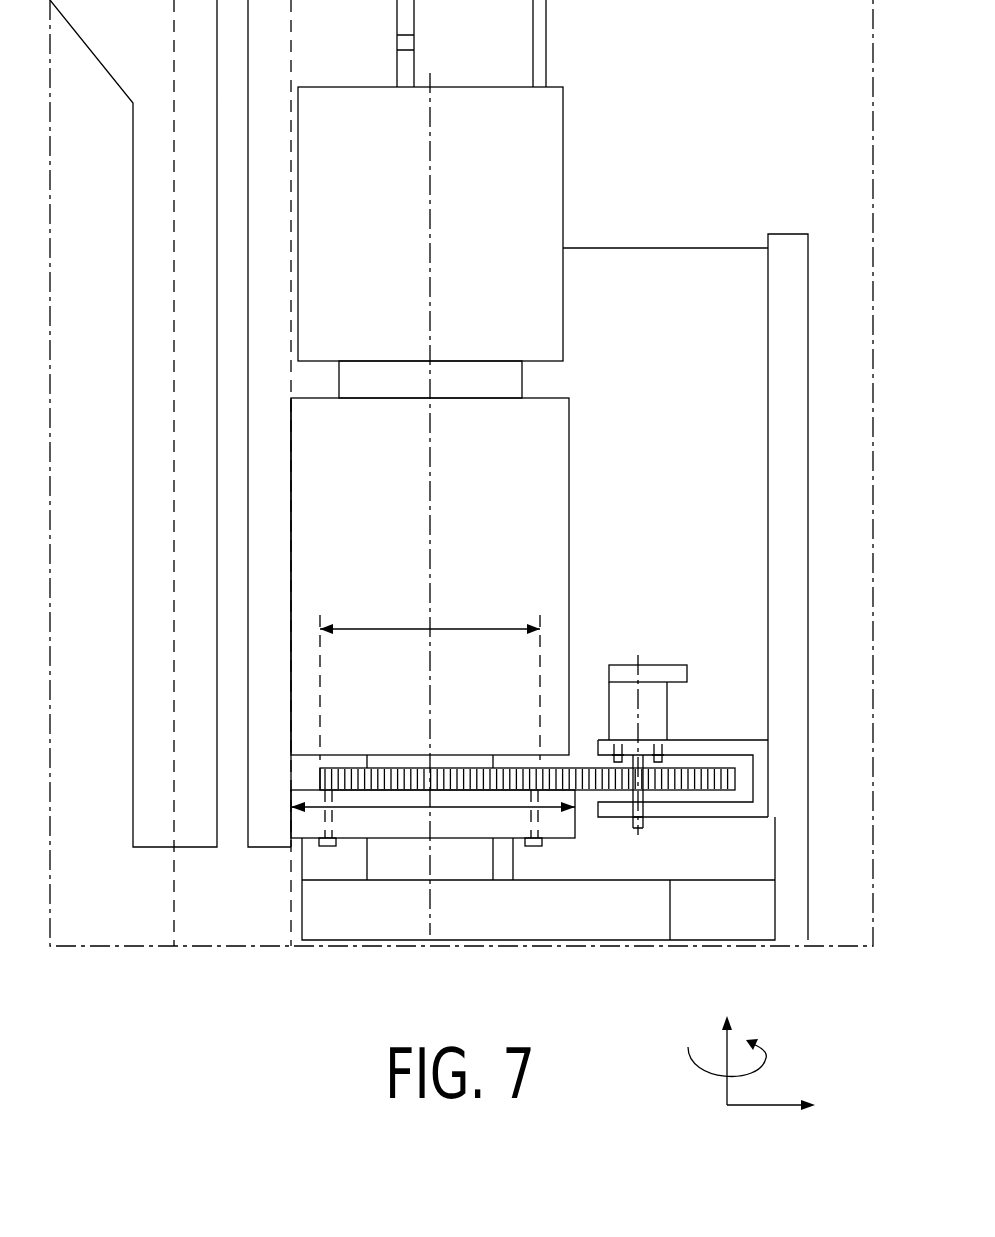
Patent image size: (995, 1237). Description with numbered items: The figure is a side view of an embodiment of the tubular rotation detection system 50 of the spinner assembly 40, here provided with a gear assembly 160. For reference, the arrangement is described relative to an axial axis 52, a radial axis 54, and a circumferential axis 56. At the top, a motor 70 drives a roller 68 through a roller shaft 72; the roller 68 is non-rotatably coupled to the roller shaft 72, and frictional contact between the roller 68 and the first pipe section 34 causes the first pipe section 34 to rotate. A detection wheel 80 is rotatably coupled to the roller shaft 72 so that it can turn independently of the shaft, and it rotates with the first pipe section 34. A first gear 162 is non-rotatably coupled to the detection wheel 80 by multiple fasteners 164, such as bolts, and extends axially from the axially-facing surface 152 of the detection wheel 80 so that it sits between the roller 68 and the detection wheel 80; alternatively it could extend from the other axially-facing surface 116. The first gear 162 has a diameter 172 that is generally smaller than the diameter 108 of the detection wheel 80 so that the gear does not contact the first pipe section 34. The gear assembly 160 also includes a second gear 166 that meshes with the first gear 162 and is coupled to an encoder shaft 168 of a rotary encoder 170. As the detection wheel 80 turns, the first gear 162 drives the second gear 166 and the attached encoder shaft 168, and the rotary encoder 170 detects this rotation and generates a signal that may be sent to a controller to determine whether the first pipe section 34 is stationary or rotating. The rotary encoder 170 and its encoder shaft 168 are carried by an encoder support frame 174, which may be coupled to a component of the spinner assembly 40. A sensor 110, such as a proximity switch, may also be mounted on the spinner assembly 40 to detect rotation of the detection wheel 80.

The first pipe section 34 is at (290, 913).
The spinner assembly 40 is at (610, 86).
The tubular rotation detection system 50 is at (601, 412).
The axial axis 52 is at (725, 1085).
The radial axis 54 is at (766, 1108).
The circumferential axis 56 is at (766, 1060).
The roller 68 is at (556, 465).
The motor 70 is at (560, 150).
The roller shaft 72 is at (513, 388).
The detection wheel 80 is at (397, 829).
The diameter 108 is at (442, 800).
The sensor 110 is at (688, 648).
The axially-facing surface 116 is at (507, 840).
The axially-facing surface 152 is at (313, 788).
The gear assembly 160 is at (587, 822).
The first gear 162 is at (446, 783).
The fasteners 164 is at (322, 823).
The second gear 166 is at (707, 776).
The encoder shaft 168 is at (642, 764).
The rotary encoder 170 is at (610, 697).
The diameter 172 is at (373, 627).
The encoder support frame 174 is at (760, 770).